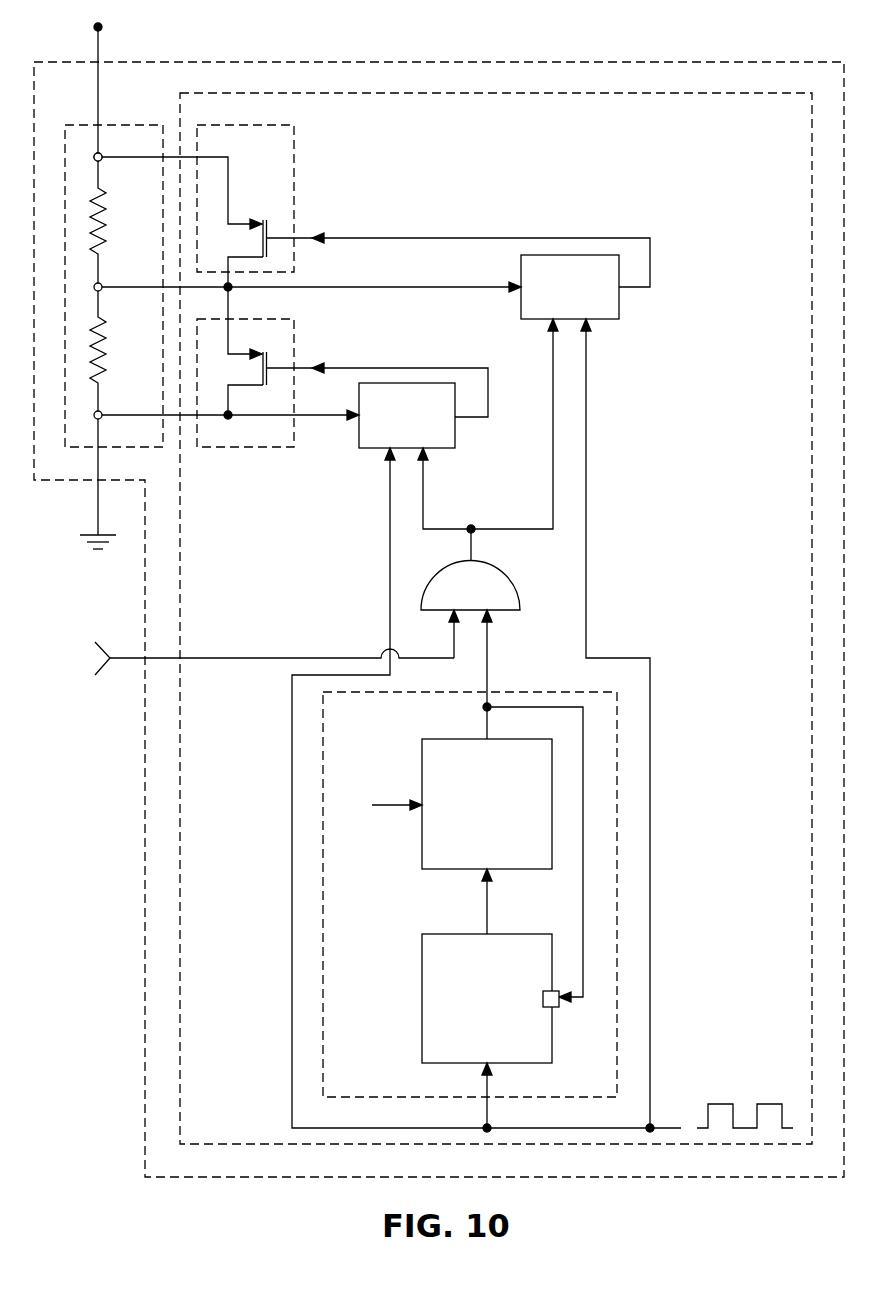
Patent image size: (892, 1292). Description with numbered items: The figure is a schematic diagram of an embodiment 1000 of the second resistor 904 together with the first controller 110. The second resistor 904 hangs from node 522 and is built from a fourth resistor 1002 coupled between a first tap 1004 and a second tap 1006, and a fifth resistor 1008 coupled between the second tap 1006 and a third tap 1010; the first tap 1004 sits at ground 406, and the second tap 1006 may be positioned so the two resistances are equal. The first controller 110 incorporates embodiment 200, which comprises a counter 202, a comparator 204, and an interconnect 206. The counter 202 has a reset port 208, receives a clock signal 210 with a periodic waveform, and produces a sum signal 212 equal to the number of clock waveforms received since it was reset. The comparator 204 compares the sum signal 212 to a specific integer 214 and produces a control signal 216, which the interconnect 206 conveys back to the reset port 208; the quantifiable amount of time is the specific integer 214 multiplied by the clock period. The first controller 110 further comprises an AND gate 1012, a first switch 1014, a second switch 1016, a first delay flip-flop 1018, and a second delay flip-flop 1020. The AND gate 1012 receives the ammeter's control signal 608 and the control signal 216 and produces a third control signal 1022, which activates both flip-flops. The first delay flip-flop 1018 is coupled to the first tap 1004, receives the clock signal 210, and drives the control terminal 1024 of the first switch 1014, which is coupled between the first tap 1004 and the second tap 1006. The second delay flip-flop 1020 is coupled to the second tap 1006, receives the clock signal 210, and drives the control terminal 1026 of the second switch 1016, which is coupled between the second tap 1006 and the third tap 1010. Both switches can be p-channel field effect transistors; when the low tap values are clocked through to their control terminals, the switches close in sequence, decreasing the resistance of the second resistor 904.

The embodiment 1000 is at (439, 619).
The first controller 110 is at (496, 618).
The node 522 is at (100, 26).
The second resistor 904 is at (126, 147).
The third tap 1010 is at (100, 161).
The fifth resistor 1008 is at (123, 222).
The second tap 1006 is at (100, 283).
The fourth resistor 1002 is at (122, 351).
The first tap 1004 is at (100, 419).
The ground 406 is at (80, 545).
The second switch 1016 is at (287, 143).
The control terminal 1026 is at (277, 237).
The first switch 1014 is at (287, 335).
The control terminal 1024 is at (270, 368).
The second delay flip-flop 1020 is at (570, 287).
The first delay flip-flop 1018 is at (407, 415).
The third control signal 1022 is at (473, 527).
The AND gate 1012 is at (470, 634).
The control signal 608 is at (254, 658).
The control signal 216 is at (489, 667).
The embodiment 200 is at (470, 894).
The comparator 204 is at (487, 804).
The specific integer 214 is at (377, 805).
The sum signal 212 is at (487, 915).
The counter 202 is at (487, 1031).
The interconnect 206 is at (583, 925).
The reset port 208 is at (552, 1008).
The clock signal 210 is at (723, 1101).